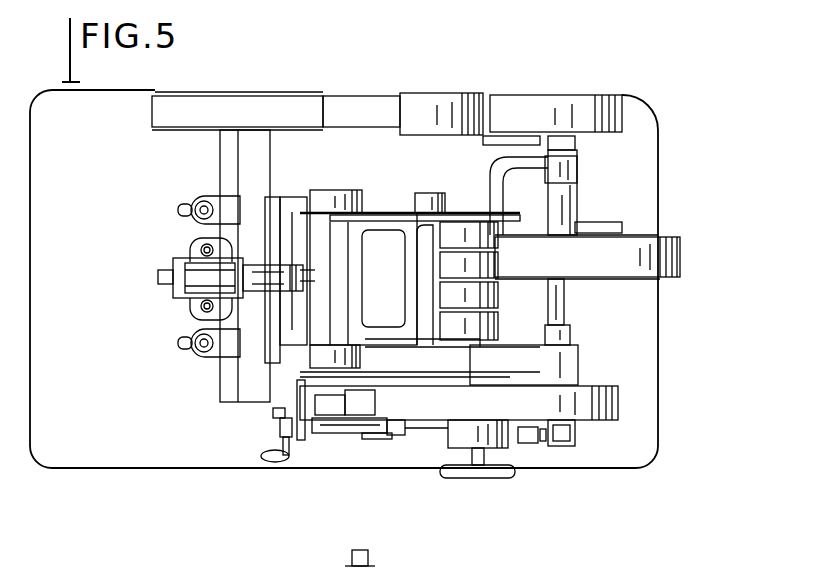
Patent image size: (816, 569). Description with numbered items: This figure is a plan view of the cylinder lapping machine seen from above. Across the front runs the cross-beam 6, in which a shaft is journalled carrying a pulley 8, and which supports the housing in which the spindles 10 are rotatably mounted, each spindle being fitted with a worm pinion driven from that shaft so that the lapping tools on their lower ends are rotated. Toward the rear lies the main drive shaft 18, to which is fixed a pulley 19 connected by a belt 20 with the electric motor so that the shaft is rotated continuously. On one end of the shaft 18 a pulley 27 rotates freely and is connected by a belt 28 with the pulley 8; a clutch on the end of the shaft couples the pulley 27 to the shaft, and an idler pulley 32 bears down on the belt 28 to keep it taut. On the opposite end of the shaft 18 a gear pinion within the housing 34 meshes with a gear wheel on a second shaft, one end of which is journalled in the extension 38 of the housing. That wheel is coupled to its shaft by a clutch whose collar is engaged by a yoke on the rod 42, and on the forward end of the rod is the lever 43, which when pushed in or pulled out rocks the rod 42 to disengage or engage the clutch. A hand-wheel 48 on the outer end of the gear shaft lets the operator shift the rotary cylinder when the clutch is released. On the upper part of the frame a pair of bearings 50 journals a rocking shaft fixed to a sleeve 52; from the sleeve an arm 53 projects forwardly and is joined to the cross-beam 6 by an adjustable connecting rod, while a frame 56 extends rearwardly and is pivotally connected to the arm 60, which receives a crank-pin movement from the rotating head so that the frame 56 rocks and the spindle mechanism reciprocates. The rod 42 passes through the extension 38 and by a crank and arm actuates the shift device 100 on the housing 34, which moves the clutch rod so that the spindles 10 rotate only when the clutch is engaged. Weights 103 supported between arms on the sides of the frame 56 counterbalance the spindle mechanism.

The cross-beam 6 is at (248, 388).
The pulley 8 is at (237, 96).
The spindles 10 is at (201, 206).
The shaft 18 is at (560, 302).
The pulley 19 is at (625, 280).
The belt 20 is at (650, 238).
The pulley 27 is at (557, 97).
The belt 28 is at (367, 102).
The idler pulley 32 is at (426, 110).
The housing 34 is at (618, 404).
The extension of the housing 38 is at (508, 448).
The rod 42 is at (418, 435).
The lever 43 is at (292, 460).
The hand-wheel 48 is at (480, 479).
The bearings 50 is at (338, 200).
The sleeve 52 is at (352, 315).
The arm 53 is at (277, 282).
The frame 56 is at (384, 222).
The arm 60 is at (430, 200).
The shift device 100 is at (560, 446).
The weights 103 is at (483, 228).